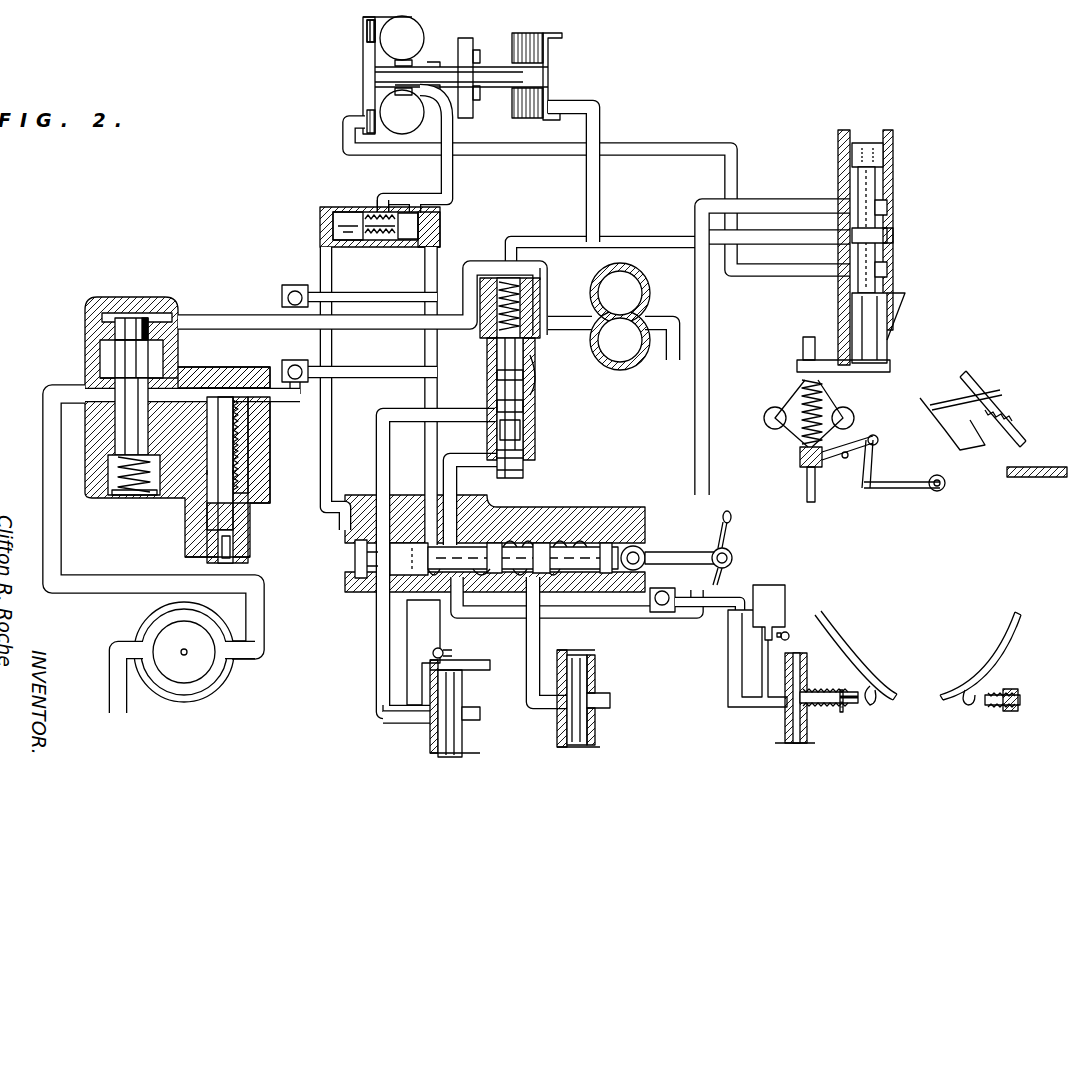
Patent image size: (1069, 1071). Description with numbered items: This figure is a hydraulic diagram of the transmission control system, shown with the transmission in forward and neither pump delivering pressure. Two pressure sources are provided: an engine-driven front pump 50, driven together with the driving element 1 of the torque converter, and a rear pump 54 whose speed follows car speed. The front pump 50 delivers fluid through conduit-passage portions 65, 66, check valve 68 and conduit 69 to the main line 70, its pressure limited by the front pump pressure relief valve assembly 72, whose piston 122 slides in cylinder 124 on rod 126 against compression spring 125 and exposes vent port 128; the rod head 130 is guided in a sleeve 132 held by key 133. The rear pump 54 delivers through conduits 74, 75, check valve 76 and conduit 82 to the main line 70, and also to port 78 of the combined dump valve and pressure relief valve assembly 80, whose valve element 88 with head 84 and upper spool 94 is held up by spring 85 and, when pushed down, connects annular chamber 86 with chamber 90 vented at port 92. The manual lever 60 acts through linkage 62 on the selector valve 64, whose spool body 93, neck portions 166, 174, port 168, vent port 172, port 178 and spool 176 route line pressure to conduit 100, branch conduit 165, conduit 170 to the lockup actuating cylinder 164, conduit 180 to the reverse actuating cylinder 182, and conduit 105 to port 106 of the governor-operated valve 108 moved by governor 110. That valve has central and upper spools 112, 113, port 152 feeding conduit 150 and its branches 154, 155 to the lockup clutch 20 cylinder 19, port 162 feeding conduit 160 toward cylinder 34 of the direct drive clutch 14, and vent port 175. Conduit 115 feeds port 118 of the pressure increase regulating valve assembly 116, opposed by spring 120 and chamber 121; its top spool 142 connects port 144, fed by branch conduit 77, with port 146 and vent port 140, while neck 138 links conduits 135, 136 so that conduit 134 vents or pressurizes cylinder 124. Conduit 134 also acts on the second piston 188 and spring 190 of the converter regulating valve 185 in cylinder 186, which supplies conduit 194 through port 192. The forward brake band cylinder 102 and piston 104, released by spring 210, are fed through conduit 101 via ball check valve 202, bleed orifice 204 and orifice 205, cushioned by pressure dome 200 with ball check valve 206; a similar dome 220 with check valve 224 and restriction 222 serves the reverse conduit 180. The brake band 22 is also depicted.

The driving element 1 is at (415, 32).
The direct drive clutch 14 is at (352, 95).
The actuating cylinder 34 is at (362, 30).
The lockup clutch 20 is at (560, 48).
The actuating cylinder or drum 19 is at (540, 120).
The conduit 150 is at (658, 240).
The branch conduit 154 is at (598, 188).
The branch conduit 155 is at (568, 246).
The conduit 160 is at (778, 292).
The conduit 105 is at (716, 470).
The conduit 194 is at (455, 175).
The helical compression spring 190 is at (368, 205).
The cylinder 186 is at (395, 248).
The second piston 188 is at (333, 212).
The regulating valve 185 is at (422, 232).
The port 192 is at (420, 256).
The conduit 69 is at (385, 345).
The conduit 134 is at (332, 480).
The line-pressure supply conduit 70 is at (424, 385).
The check valve 76 is at (280, 296).
The check valve 68 is at (280, 360).
The combined dump valve and pressure relief valve assembly 80 is at (104, 429).
The conduit-passage portion 65 is at (43, 394).
The port 78 is at (100, 315).
The upper spool 94 is at (113, 330).
The head 84 is at (145, 318).
The vent port 92 is at (100, 356).
The valve chamber 90 is at (160, 352).
The annular chamber 86 is at (100, 378).
The conduit-passage portion 66 is at (192, 368).
The valve element 88 is at (140, 400).
The spring 85 is at (130, 495).
The vent port 128 is at (260, 420).
The piston 122 is at (258, 445).
The cylinder 124 is at (256, 462).
The slidable rod 126 is at (258, 478).
The compression spring 125 is at (268, 493).
The sleeve 132 is at (250, 515).
The key 133 is at (248, 540).
The head 130 is at (250, 560).
The front pump pressure relief valve assembly 72 is at (193, 568).
The front pump 50 is at (150, 620).
The conduit 82 is at (368, 290).
The conduit 135 is at (358, 425).
The conduit 136 is at (372, 462).
The pressure dome 220 is at (415, 610).
The restriction 222 is at (375, 710).
The conduit 180 is at (378, 722).
The conduit 115 is at (445, 462).
The chamber 121 is at (470, 270).
The conduit 75 is at (552, 272).
The compression spring 120 is at (550, 280).
The top spool portion 142 is at (487, 342).
The pressure increase regulating valve assembly 116 is at (487, 355).
The port 146 is at (490, 372).
The port 144 is at (490, 385).
The vent port 140 is at (540, 392).
The branch conduit 77 is at (555, 398).
The reduced neck section 138 is at (525, 426).
The port 118 is at (535, 458).
The conduit 74 is at (575, 350).
The rear pump 54 is at (640, 278).
The upper spool 113 is at (888, 162).
The vent port 175 is at (890, 298).
The port 106 is at (889, 210).
The central spool 112 is at (889, 232).
The port 152 is at (893, 242).
The port 162 is at (889, 268).
The governor-operated valve 108 is at (900, 333).
The governor 110 is at (850, 405).
The spool 176 is at (418, 525).
The valve shaft 93 is at (504, 559).
The neck portion 174 is at (512, 545).
The port 168 is at (555, 530).
The neck portion 166 is at (605, 530).
The port 178 is at (352, 585).
The linkage 62 is at (698, 558).
The lever 60 is at (740, 552).
The selector valve 64 is at (652, 540).
The vent port 172 is at (505, 600).
The branch conduit 165 is at (565, 608).
The conduit 100 is at (612, 620).
The conduit 170 is at (527, 663).
The actuating cylinder 164 is at (570, 750).
The actuating cylinder 182 is at (440, 752).
The check valve 224 is at (445, 650).
The ball check valve 202 is at (660, 612).
The bleed orifice 204 is at (713, 600).
The restricted orifice 205 is at (722, 625).
The conduit 101 is at (730, 682).
The airtrap pressure dome 200 is at (786, 590).
The ball check valve 206 is at (790, 630).
The cylinder 102 is at (792, 726).
The piston 104 is at (805, 680).
The brake band releasing spring 210 is at (825, 718).
The brake band 22 is at (1013, 660).